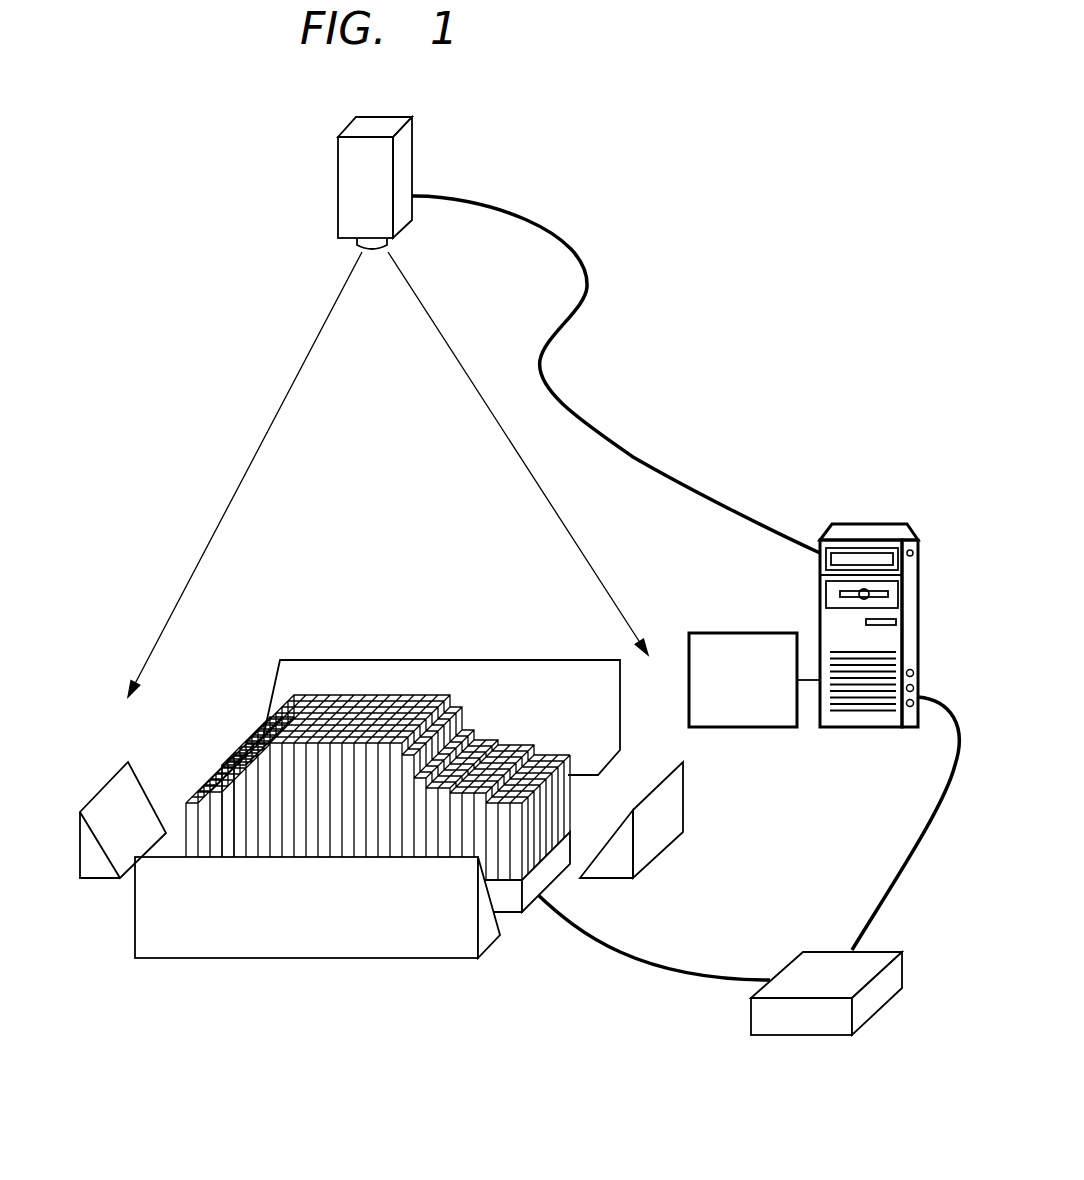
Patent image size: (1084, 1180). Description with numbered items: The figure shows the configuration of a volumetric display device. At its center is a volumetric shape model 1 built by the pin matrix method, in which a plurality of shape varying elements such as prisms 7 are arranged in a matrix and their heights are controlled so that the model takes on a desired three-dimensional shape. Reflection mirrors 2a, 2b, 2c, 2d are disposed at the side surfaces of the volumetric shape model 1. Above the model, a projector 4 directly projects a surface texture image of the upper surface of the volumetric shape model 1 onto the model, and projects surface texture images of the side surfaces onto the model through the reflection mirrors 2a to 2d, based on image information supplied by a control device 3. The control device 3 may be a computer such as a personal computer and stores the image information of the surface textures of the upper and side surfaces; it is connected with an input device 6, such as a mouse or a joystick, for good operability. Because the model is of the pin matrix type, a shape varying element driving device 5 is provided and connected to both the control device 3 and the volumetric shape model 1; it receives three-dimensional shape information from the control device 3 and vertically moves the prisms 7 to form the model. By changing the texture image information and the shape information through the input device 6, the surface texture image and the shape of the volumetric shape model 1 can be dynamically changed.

The volumetric shape model 1 is at (197, 752).
The reflection mirror 2a is at (683, 797).
The reflection mirror 2b is at (342, 960).
The reflection mirror 2c is at (532, 660).
The reflection mirror 2d is at (125, 775).
The control device 3 is at (868, 524).
The projector 4 is at (412, 143).
The shape varying element driving device 5 is at (797, 1035).
The input device 6 is at (742, 633).
The prism 7 is at (222, 752).